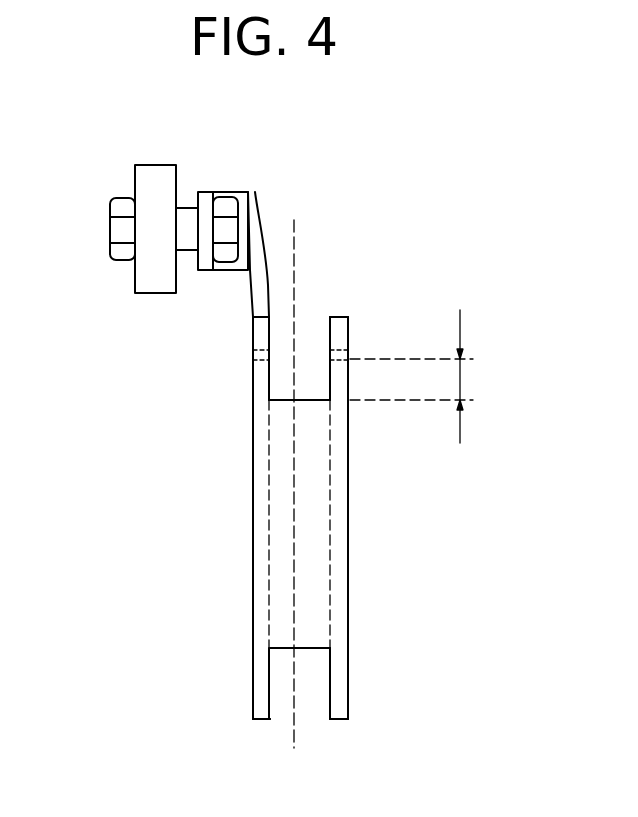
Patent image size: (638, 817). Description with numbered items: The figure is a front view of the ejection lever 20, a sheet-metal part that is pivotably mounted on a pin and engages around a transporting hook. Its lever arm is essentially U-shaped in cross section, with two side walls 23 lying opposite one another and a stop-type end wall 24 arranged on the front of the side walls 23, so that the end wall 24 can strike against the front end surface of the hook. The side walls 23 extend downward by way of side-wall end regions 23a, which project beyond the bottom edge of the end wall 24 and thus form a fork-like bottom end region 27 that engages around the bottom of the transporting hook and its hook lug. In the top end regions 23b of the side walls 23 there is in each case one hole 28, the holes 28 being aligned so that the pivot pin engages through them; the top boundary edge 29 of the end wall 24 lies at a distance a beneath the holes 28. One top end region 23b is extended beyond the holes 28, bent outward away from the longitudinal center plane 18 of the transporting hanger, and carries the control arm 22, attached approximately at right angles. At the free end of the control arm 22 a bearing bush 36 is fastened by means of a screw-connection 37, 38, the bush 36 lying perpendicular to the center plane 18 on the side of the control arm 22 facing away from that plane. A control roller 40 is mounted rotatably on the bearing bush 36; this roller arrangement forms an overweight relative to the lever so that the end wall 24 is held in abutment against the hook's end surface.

The longitudinal center plane 18 is at (295, 248).
The ejection lever 20 is at (328, 491).
The control arm 22 is at (237, 189).
The side walls 23 is at (252, 480).
The side-wall end regions 23a is at (257, 695).
The top end regions 23b is at (257, 303).
The end wall 24 is at (310, 525).
The fork-like bottom end region 27 is at (389, 658).
The hole 28 is at (253, 354).
The top boundary edge 29 is at (278, 400).
The bearing bush 36 is at (188, 207).
The screw-connection 37 is at (225, 202).
The screw-connection 38 is at (120, 233).
The control roller 40 is at (158, 173).
The distance a is at (412, 376).